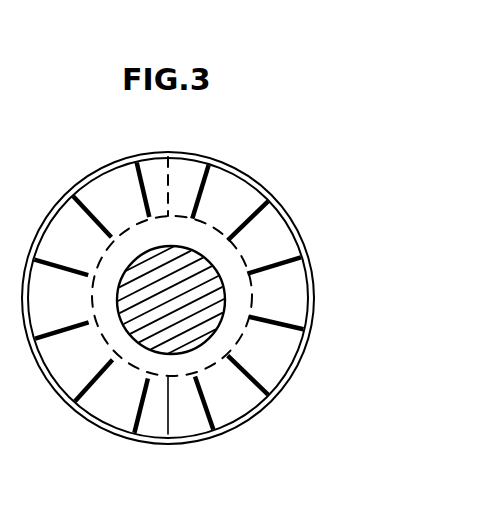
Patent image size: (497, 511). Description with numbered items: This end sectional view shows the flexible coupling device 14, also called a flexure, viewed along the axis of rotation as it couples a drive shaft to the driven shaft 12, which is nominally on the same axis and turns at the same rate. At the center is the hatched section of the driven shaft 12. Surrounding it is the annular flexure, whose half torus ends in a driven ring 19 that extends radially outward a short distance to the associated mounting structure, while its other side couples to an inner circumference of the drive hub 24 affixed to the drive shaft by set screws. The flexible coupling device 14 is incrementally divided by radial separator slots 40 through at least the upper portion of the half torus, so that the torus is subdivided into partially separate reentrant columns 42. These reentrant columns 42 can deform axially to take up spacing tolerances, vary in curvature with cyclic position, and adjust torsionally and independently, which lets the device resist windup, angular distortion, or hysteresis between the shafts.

The driven shaft 12 is at (118, 343).
The flexible coupling device 14 is at (223, 163).
The driven ring 19 is at (258, 186).
The drive hub 24 is at (210, 360).
The radial separator slots 40 is at (278, 266).
The reentrant columns 42 is at (276, 356).